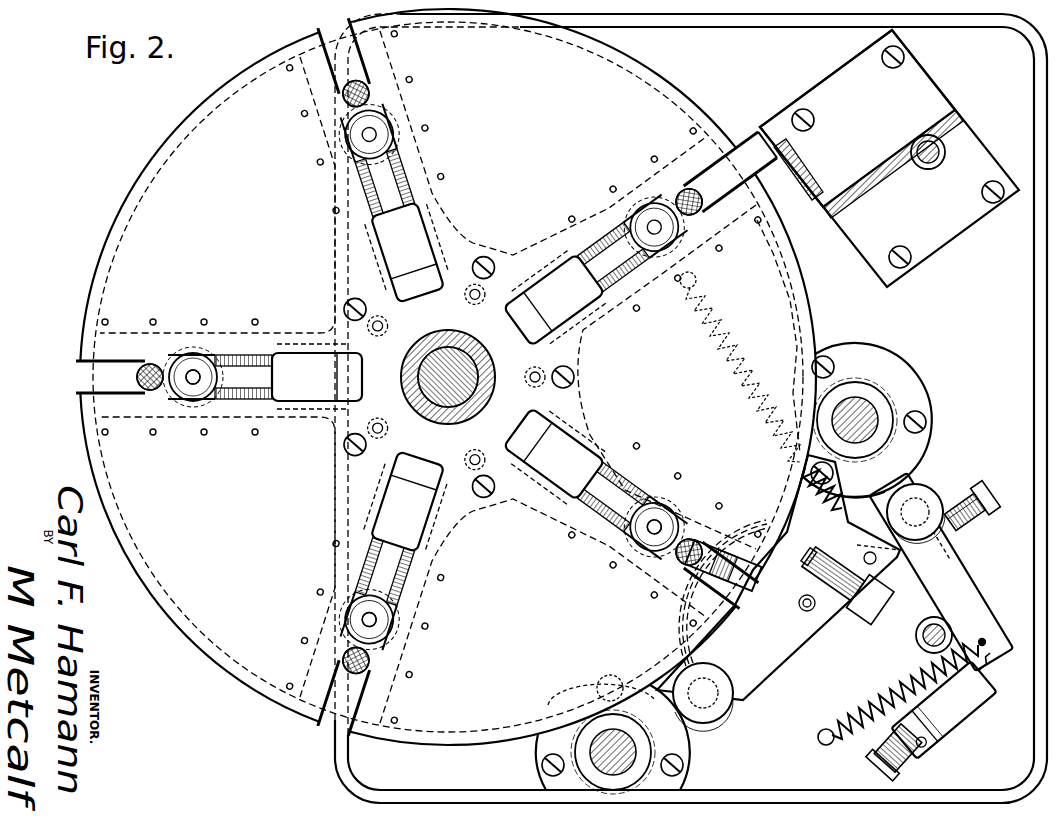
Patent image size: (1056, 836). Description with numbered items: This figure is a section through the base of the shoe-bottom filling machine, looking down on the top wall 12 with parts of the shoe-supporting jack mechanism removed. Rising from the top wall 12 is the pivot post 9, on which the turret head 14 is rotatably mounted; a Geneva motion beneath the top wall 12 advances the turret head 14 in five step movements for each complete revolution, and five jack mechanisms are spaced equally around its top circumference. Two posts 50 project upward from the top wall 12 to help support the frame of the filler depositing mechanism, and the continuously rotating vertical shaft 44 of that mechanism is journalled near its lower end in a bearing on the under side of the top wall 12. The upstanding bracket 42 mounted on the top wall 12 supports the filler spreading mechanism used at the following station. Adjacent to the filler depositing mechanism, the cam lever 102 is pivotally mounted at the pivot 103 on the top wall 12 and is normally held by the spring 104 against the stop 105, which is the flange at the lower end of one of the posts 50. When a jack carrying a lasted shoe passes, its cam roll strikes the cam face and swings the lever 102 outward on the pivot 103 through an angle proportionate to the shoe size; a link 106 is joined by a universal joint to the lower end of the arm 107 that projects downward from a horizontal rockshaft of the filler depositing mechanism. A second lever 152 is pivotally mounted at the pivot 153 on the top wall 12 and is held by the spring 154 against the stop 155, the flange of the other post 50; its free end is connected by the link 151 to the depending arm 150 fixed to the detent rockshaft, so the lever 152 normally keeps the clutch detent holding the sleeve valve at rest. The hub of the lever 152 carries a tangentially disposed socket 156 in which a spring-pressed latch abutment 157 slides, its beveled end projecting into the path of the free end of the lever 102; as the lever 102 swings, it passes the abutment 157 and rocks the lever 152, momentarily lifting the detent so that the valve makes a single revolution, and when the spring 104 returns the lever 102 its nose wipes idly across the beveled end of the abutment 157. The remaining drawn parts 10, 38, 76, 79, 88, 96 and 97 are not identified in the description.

The pivot post 9 is at (473, 360).
The frame 10 is at (1048, 290).
The top wall 12 is at (1032, 324).
The turret head 14 is at (242, 640).
The pivot pin 38 is at (930, 162).
The upstanding bracket 42 is at (830, 220).
The vertical shaft 44 is at (918, 640).
The post 50 is at (867, 400).
The pivot pin 76 is at (378, 93).
The radial slot 79 is at (334, 34).
The slide bar 88 is at (441, 376).
The roller guide 96 is at (378, 188).
The roller 97 is at (200, 390).
The cam lever 102 is at (778, 577).
The pivot 103 is at (720, 700).
The spring 104 is at (733, 368).
The stop 105 is at (658, 621).
The link 106 is at (734, 586).
The arm 107 is at (842, 598).
The depending arm 150 is at (907, 733).
The link 151 is at (960, 733).
The lever 152 is at (977, 590).
The pivot 153 is at (920, 503).
The spring 154 is at (910, 673).
The stop 155 is at (853, 480).
The socket 156 is at (970, 490).
The latch abutment 157 is at (908, 560).